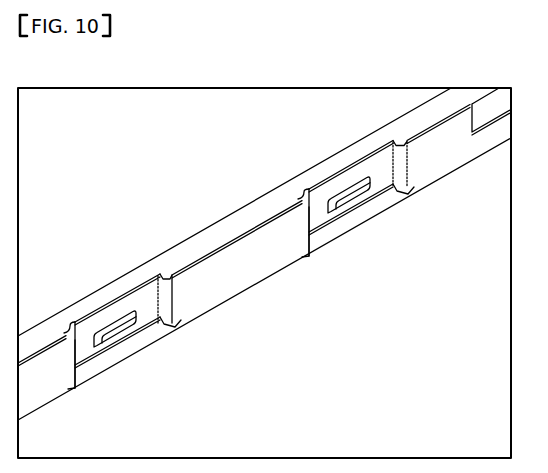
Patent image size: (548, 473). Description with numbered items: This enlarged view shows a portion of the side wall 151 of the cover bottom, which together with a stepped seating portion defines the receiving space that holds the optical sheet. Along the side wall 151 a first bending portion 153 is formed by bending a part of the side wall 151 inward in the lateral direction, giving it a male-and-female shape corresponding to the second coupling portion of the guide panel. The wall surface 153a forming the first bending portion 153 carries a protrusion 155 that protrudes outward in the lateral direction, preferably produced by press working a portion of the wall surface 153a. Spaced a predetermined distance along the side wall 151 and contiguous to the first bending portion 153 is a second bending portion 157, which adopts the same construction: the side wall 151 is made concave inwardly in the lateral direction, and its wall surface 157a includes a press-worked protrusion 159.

The side wall 151 is at (204, 306).
The first bending portion 153 is at (122, 359).
The wall surface 153a is at (82, 352).
The protrusion 155 is at (127, 349).
The second bending portion 157 is at (355, 225).
The wall surface 157a is at (313, 218).
The protrusion 159 is at (357, 216).